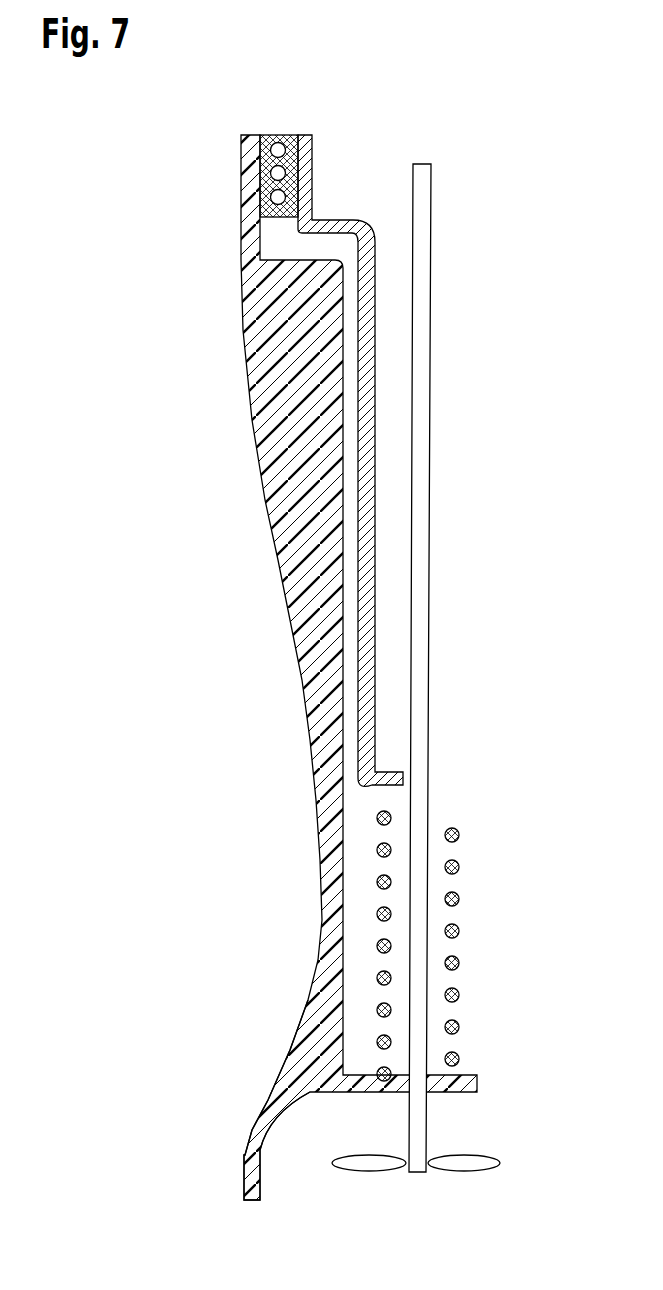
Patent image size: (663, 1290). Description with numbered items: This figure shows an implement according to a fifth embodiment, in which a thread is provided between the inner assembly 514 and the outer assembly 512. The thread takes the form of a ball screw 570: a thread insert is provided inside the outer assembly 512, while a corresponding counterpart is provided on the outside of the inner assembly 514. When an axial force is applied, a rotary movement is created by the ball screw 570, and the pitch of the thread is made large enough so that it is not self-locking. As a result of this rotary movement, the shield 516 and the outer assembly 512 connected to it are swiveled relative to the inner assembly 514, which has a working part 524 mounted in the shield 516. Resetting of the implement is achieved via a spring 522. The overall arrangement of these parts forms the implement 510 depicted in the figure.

The module assembly 510 is at (343, 637).
The outer assembly 512 is at (278, 452).
The inner assembly 514 is at (306, 135).
The shield 516 is at (247, 1148).
The spring 522 is at (458, 898).
The working part 524 is at (475, 1163).
The ball screw 570 is at (294, 156).